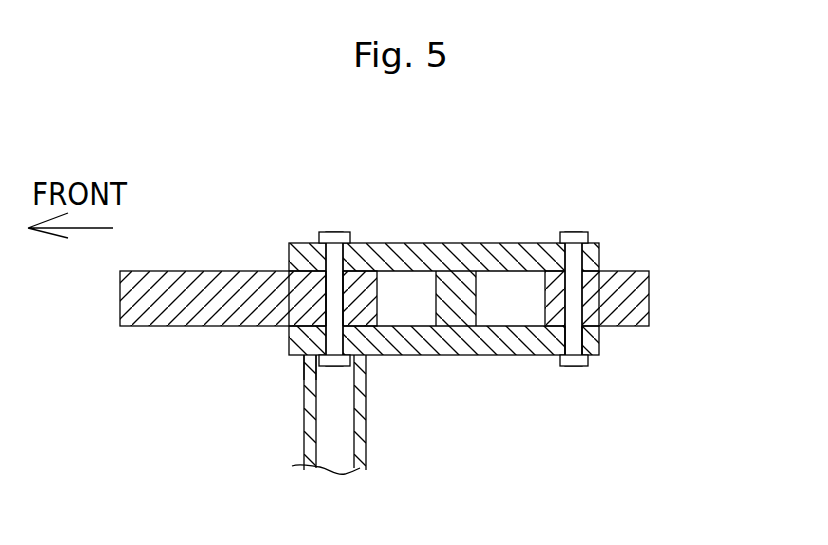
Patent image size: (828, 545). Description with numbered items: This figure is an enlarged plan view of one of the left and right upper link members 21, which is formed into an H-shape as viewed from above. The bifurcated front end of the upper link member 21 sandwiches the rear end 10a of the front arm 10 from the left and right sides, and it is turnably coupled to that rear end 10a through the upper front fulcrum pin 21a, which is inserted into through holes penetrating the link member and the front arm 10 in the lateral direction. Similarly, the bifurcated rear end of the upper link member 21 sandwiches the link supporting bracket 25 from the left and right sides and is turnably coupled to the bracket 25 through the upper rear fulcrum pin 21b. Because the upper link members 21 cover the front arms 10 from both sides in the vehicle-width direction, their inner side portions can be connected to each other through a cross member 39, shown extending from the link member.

The front arm 10 is at (150, 312).
The rear end of the front arm 10a is at (320, 298).
The upper link member 21 is at (448, 358).
The upper front fulcrum pin 21a is at (303, 378).
The upper rear fulcrum pin 21b is at (575, 367).
The link supporting bracket 25 is at (607, 293).
The cross member 39 is at (363, 440).